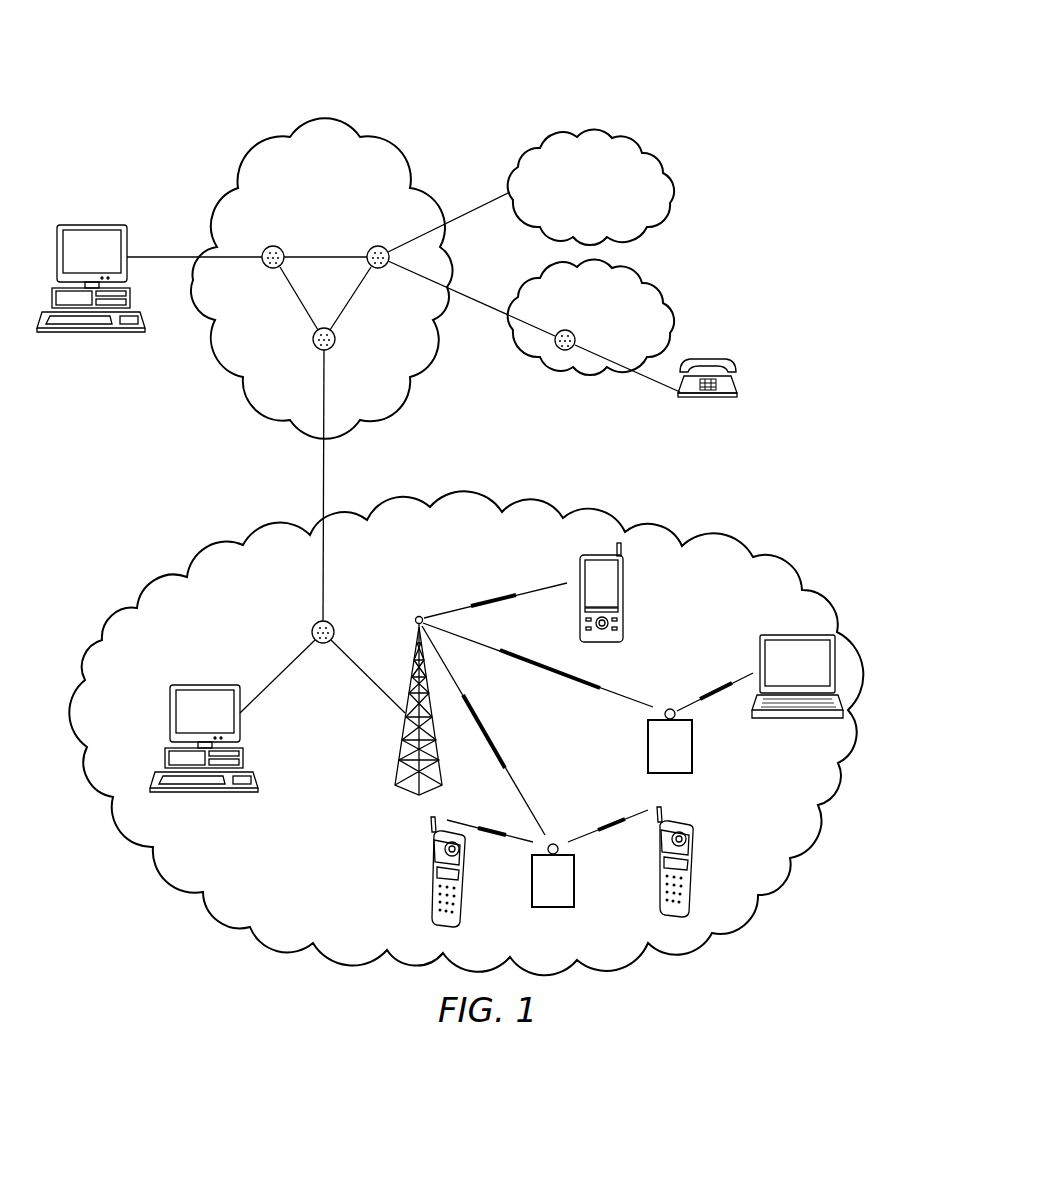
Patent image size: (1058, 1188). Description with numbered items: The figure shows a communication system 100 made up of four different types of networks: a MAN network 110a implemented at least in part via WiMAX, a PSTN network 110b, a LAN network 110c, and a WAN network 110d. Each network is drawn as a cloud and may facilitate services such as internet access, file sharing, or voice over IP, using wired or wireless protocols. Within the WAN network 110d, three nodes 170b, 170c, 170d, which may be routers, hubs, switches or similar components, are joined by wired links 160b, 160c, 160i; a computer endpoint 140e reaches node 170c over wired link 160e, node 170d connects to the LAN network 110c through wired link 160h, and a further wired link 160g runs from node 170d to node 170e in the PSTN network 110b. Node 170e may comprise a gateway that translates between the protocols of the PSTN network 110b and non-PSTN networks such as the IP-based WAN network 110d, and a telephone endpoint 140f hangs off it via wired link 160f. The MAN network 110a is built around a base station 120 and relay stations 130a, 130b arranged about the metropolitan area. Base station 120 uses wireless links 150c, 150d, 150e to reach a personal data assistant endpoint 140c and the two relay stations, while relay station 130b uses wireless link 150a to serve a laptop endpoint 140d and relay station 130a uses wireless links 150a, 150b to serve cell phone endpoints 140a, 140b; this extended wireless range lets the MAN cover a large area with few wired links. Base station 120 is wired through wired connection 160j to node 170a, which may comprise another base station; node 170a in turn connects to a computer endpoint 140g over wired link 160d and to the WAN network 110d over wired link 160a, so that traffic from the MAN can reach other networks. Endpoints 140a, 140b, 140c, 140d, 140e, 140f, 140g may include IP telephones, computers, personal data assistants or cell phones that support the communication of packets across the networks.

The communication system 100 is at (652, 80).
The network 110a is at (207, 547).
The network 110b is at (553, 373).
The network 110c is at (677, 192).
The network 110d is at (250, 154).
The base station 120 is at (396, 762).
The relay station 130a is at (553, 910).
The relay station 130b is at (693, 745).
The endpoint 140a is at (426, 884).
The endpoint 140b is at (695, 870).
The endpoint 140c is at (625, 597).
The endpoint 140d is at (810, 722).
The endpoint 140e is at (92, 224).
The endpoint 140f is at (704, 357).
The endpoint 140g is at (202, 685).
The wireless link 150a is at (690, 702).
The wireless link 150b is at (621, 820).
The wireless link 150c is at (506, 594).
The wireless link 150d is at (508, 770).
The wireless link 150e is at (606, 700).
The wired link 160a is at (325, 585).
The wired link 160b is at (296, 300).
The wired link 160c is at (354, 300).
The wired link 160d is at (262, 690).
The wired link 160e is at (176, 255).
The wired link 160f is at (653, 383).
The wired link 160g is at (479, 301).
The wired link 160h is at (470, 211).
The wired link 160i is at (334, 255).
The wired connection 160j is at (380, 649).
The node 170a is at (311, 630).
The node 170b is at (338, 345).
The node 170c is at (271, 246).
The node 170d is at (380, 246).
The node 170e is at (569, 330).